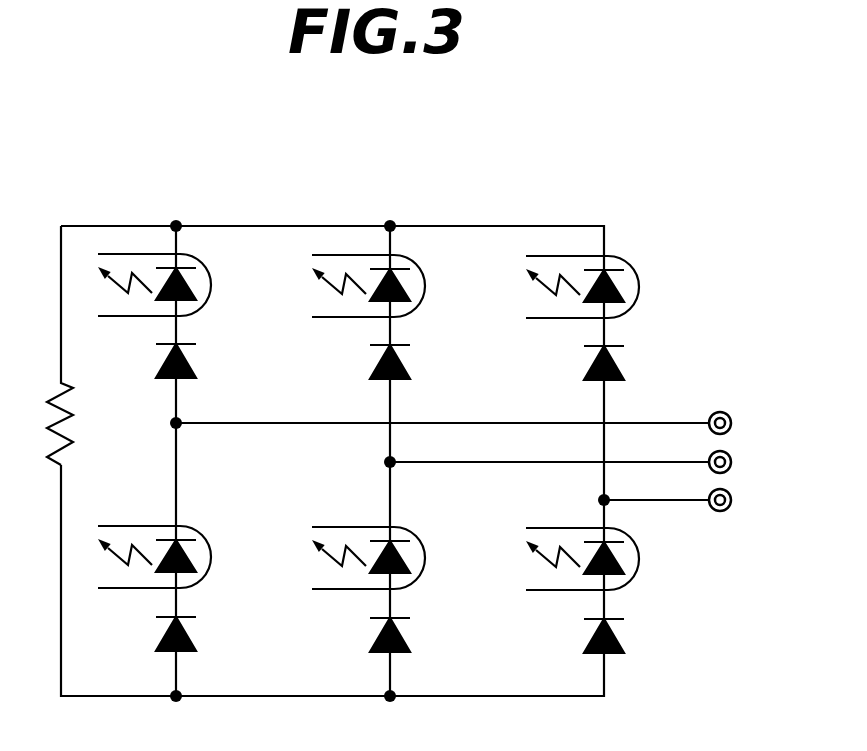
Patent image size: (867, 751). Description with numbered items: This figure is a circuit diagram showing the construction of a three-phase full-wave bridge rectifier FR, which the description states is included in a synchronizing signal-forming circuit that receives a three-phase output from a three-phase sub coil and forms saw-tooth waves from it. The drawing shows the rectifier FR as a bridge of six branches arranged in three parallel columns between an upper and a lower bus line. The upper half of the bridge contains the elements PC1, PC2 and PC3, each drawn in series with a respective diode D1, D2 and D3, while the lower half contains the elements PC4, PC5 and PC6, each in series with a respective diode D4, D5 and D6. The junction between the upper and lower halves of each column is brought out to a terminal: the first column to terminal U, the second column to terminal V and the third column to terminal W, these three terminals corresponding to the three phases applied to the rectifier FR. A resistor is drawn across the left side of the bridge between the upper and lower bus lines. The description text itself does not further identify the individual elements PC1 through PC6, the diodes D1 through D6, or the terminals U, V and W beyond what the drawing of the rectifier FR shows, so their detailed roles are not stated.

The three-phase full-wave bridge rectifier FR is at (295, 188).
The photocoupler PC1 is at (189, 285).
The photocoupler PC2 is at (403, 286).
The photocoupler PC3 is at (617, 287).
The photocoupler PC4 is at (189, 557).
The photocoupler PC5 is at (403, 558).
The photocoupler PC6 is at (617, 559).
The diode D1 is at (204, 360).
The diode D2 is at (418, 361).
The diode D3 is at (632, 362).
The diode D4 is at (204, 636).
The diode D5 is at (418, 637).
The diode D6 is at (632, 638).
The U-phase output terminal U is at (471, 427).
The V-phase output terminal V is at (577, 463).
The W-phase output terminal W is at (687, 502).